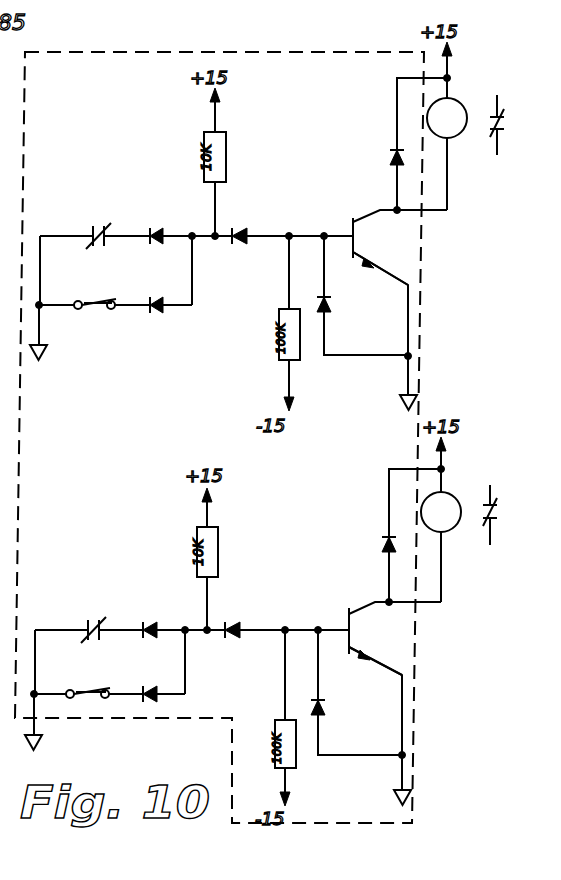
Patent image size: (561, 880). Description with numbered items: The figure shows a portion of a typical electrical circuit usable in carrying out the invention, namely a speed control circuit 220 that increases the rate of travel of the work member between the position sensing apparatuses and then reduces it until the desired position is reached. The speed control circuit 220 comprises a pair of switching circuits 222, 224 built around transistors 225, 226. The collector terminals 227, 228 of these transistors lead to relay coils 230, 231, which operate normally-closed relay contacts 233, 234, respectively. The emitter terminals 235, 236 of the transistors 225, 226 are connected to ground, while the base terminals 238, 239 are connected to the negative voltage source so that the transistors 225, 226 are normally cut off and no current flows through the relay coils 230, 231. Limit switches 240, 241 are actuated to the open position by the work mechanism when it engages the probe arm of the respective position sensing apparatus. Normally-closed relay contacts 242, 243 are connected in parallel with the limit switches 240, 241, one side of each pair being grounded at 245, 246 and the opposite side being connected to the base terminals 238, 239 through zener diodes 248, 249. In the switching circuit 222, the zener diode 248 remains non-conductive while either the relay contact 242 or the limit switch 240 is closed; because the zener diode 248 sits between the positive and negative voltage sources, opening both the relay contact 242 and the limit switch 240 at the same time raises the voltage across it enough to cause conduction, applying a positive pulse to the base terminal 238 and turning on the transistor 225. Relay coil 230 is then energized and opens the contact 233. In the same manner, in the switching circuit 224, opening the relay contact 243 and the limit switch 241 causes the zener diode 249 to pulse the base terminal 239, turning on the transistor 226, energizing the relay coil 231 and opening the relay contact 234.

The speed control circuit 220 is at (432, 677).
The switching circuit 222 is at (340, 189).
The switching circuit 224 is at (340, 578).
The transistor 225 is at (402, 282).
The transistor 226 is at (368, 664).
The collector terminal 227 is at (400, 213).
The collector terminal 228 is at (391, 605).
The relay coil 230 is at (450, 140).
The relay coil 231 is at (421, 512).
The normally-closed relay contact 233 is at (533, 84).
The normally-closed relay contact 234 is at (490, 496).
The emitter terminal 235 is at (412, 358).
The emitter terminal 236 is at (400, 758).
The base terminal 238 is at (324, 234).
The base terminal 239 is at (318, 628).
The limit switch 240 is at (106, 266).
The limit switch 241 is at (92, 691).
The normally-closed relay contact 242 is at (98, 226).
The normally-closed relay contact 243 is at (93, 620).
The ground 245 is at (41, 313).
The ground 246 is at (36, 700).
The zener diode 248 is at (240, 247).
The zener diode 249 is at (255, 668).